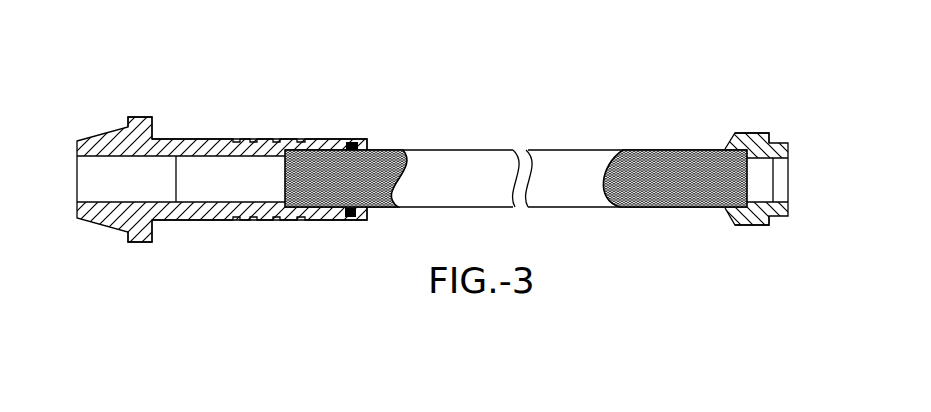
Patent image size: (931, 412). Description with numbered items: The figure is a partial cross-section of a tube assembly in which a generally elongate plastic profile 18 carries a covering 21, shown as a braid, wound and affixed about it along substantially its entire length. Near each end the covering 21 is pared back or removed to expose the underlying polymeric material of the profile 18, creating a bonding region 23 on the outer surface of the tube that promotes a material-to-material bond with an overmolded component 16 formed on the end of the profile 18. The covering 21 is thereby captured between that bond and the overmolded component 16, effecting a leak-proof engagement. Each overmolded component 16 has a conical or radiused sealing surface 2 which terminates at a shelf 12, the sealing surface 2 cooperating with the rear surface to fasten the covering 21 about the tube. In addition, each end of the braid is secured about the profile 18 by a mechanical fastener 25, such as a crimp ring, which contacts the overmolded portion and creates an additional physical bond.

The sealing surface 2 is at (105, 135).
The shelf 12 is at (140, 118).
The overmolded component 16 is at (193, 139).
The profile 18 is at (468, 148).
The covering 21 is at (383, 210).
The bonding region 23 is at (272, 188).
The mechanical fastener 25 is at (350, 145).